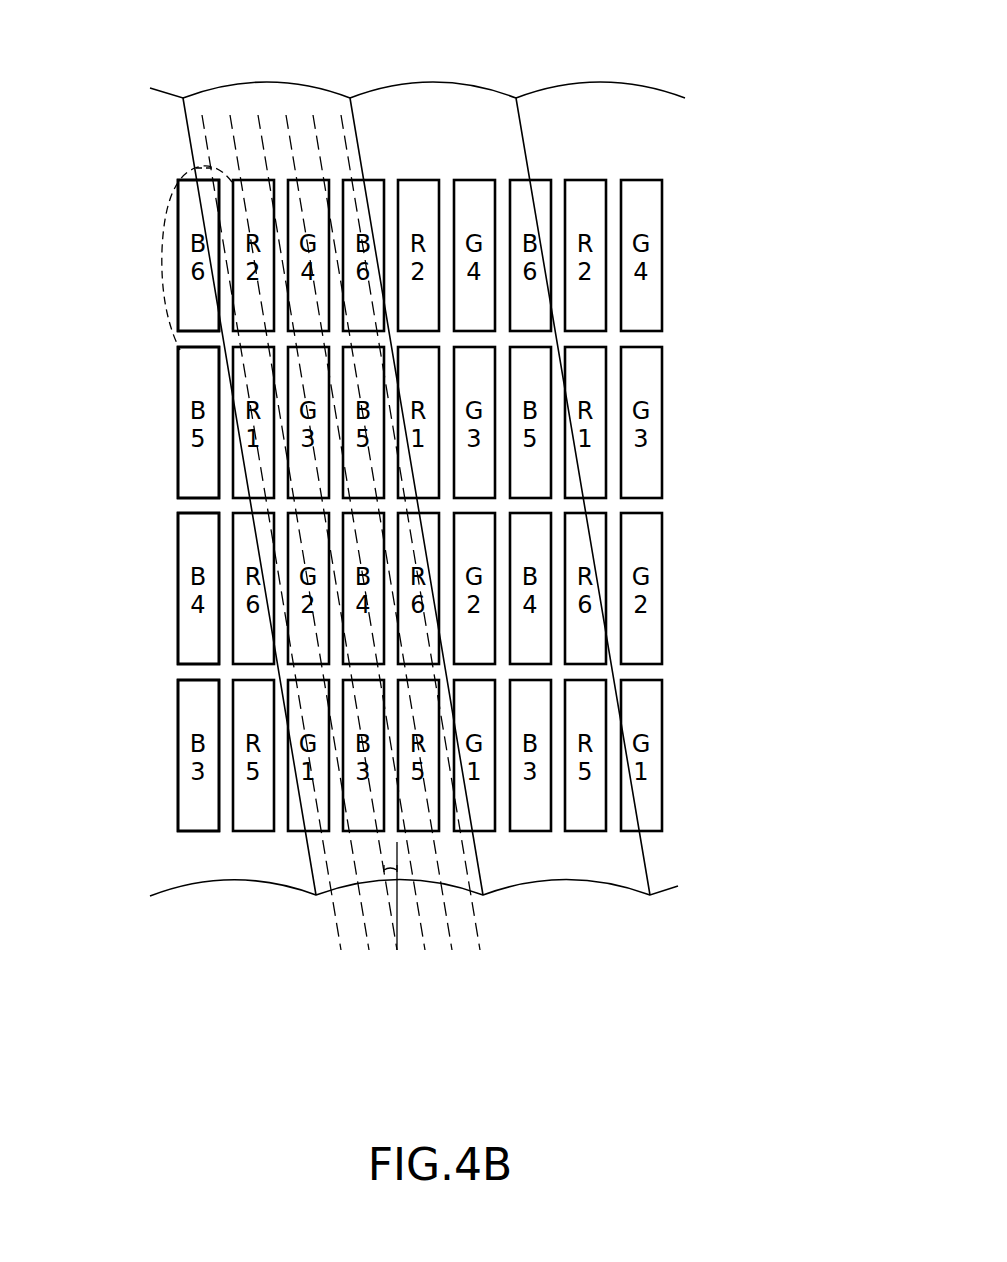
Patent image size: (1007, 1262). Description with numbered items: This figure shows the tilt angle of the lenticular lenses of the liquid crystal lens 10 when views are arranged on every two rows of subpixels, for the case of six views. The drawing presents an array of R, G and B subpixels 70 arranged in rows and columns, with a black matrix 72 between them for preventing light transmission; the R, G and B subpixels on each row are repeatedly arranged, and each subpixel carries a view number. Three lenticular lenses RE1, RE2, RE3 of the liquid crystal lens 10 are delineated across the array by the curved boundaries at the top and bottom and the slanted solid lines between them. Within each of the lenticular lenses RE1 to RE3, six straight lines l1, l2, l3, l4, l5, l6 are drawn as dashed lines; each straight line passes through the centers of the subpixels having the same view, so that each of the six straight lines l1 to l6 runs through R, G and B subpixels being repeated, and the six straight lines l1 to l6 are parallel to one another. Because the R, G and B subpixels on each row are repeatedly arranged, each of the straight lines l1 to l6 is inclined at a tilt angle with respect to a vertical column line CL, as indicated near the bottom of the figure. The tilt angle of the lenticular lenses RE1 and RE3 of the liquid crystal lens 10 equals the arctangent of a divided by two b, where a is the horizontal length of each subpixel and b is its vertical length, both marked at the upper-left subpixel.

The liquid crystal lens 10 is at (708, 66).
The subpixels 70 is at (190, 381).
The black matrix 72 is at (183, 505).
The lenticular lens RE1 is at (267, 84).
The lenticular lens RE2 is at (434, 84).
The lenticular lens RE3 is at (600, 84).
The straight line l1 is at (340, 932).
The straight line l2 is at (368, 930).
The straight line l3 is at (396, 925).
The straight line l4 is at (423, 935).
The straight line l5 is at (450, 933).
The straight line l6 is at (477, 925).
The column line CL is at (397, 930).
The horizontal length of subpixel a is at (205, 156).
The vertical length of subpixel b is at (188, 258).